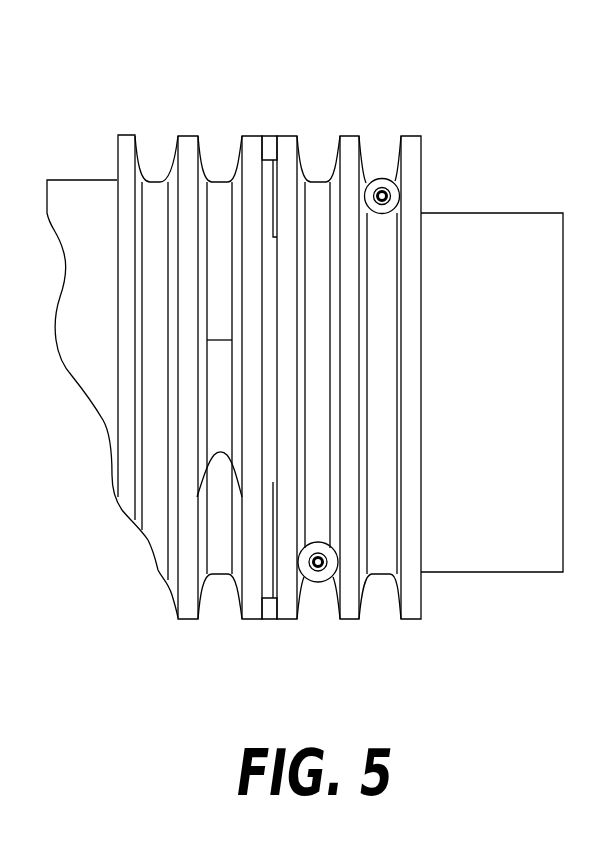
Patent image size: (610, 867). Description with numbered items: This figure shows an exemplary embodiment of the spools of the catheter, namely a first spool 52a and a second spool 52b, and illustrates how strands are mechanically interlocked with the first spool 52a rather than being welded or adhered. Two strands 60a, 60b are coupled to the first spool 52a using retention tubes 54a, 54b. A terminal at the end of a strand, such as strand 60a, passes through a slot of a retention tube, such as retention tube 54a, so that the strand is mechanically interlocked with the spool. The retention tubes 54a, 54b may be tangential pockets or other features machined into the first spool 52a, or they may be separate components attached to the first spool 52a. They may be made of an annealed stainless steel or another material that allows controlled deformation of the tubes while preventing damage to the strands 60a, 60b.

The first spool 52a is at (350, 136).
The second spool 52b is at (190, 136).
The retention tube 54a is at (399, 200).
The retention tube 54b is at (306, 576).
The strand 60a is at (383, 196).
The strand 60b is at (318, 562).